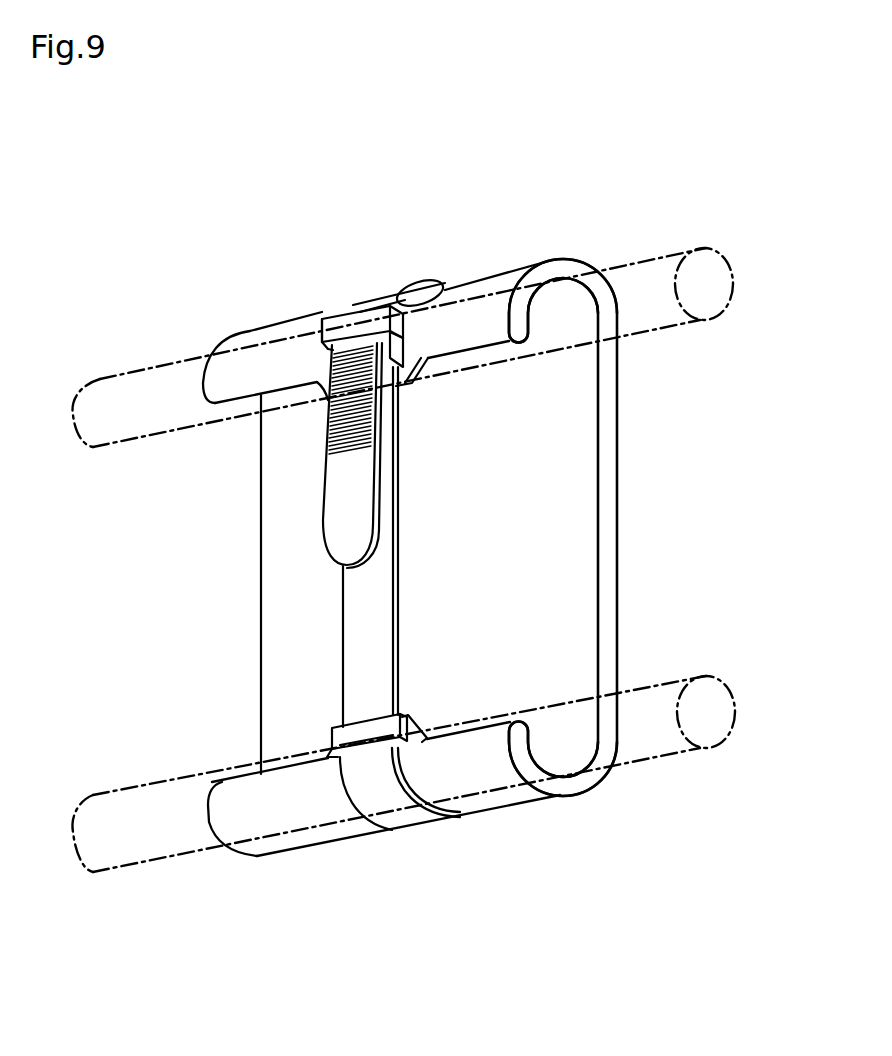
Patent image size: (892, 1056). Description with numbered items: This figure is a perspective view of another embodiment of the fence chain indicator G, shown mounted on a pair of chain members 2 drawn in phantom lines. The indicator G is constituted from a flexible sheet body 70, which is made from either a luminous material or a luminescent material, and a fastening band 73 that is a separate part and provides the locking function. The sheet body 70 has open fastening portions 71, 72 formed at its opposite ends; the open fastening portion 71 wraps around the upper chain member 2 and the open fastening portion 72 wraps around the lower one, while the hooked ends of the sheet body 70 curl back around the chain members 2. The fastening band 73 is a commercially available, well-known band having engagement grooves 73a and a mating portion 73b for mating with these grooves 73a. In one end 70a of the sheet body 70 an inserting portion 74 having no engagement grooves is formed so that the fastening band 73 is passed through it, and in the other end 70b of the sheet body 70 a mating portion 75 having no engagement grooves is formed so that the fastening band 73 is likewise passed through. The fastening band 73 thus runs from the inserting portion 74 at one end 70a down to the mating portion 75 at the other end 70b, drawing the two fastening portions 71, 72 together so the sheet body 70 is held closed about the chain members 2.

The pipe 2 is at (634, 262).
The flexible sheet body 70 is at (613, 497).
The one end of sheet body 70a is at (490, 345).
The other end of sheet body 70b is at (518, 712).
The open fastening portion 71 is at (485, 288).
The open fastening portion 72 is at (480, 783).
The fastening band 73 is at (340, 527).
The engagement grooves 73a is at (443, 283).
The mating portion 73b is at (322, 330).
The inserting portion 74 is at (413, 387).
The mating portion 75 is at (360, 722).
The fence chain indicator G is at (369, 218).